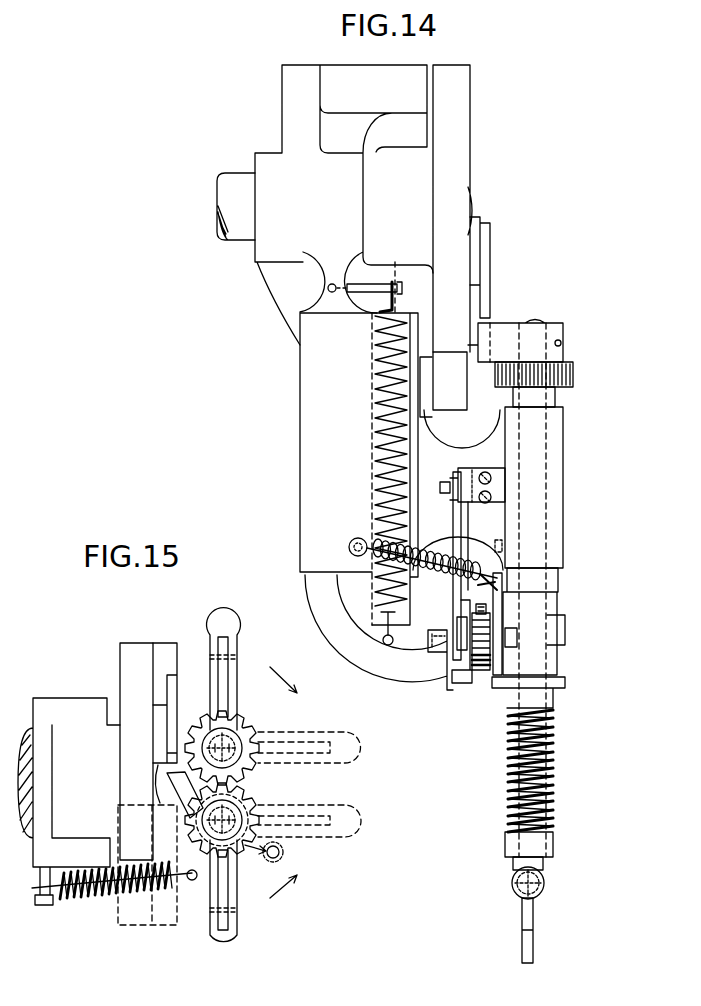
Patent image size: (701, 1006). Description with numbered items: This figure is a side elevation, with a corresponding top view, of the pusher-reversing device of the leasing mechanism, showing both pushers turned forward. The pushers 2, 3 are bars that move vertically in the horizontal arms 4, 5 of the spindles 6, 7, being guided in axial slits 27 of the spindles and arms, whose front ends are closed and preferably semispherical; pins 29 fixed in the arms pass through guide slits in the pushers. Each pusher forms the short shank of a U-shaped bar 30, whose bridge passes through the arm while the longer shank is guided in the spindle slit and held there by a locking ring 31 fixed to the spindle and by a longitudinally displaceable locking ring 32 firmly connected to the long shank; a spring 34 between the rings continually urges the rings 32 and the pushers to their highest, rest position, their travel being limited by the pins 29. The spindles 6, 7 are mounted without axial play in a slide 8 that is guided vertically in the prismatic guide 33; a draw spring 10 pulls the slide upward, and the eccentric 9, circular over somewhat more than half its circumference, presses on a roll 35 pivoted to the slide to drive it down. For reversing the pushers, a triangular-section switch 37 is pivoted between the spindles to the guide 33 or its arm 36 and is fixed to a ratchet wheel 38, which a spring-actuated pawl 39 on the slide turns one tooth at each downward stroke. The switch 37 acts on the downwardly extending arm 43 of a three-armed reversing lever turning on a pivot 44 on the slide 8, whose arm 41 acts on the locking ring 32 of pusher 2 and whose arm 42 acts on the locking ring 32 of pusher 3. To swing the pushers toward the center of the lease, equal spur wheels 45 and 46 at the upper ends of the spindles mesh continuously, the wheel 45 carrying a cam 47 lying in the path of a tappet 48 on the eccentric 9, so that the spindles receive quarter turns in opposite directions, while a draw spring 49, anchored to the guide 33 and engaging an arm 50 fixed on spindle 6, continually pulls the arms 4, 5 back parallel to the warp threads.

In FIG. 15, the pusher 2 is at (222, 947).
In FIG. 15, the pusher 3 is at (233, 615).
In FIG. 14, the horizontal arm 4 is at (540, 893).
In FIG. 15, the horizontal arm 4 is at (230, 945).
In FIG. 15, the horizontal arm 5 is at (237, 630).
In FIG. 14, the spindle 6 is at (548, 800).
In FIG. 15, the spindle 6 is at (235, 840).
In FIG. 15, the spindle 7 is at (233, 742).
In FIG. 14, the slide 8 is at (555, 430).
In FIG. 14, the eccentric 9 is at (456, 117).
In FIG. 15, the eccentric 9 is at (127, 667).
In FIG. 14, the draw spring 10 is at (372, 278).
In FIG. 14, the axial slit 27 is at (528, 782).
In FIG. 14, the pin 29 is at (517, 887).
In FIG. 15, the pin 29 is at (205, 912).
In FIG. 14, the U-shaped bar 30 is at (528, 958).
In FIG. 15, the U-shaped bar 30 is at (245, 900).
In FIG. 14, the locking ring 31 is at (512, 843).
In FIG. 14, the locking ring 32 is at (567, 697).
In FIG. 14, the prismatic guide 33 is at (315, 435).
In FIG. 15, the prismatic guide 33 is at (68, 707).
In FIG. 14, the spring 34 is at (547, 760).
In FIG. 14, the roll 35 is at (460, 388).
In FIG. 14, the arm 36 is at (383, 667).
In FIG. 14, the switch 37 is at (487, 678).
In FIG. 14, the ratchet wheel 38 is at (462, 672).
In FIG. 14, the spring-actuated pawl 39 is at (457, 527).
In FIG. 14, the arm of reversing lever 41 is at (497, 665).
In FIG. 14, the arm of reversing lever 42 is at (497, 552).
In FIG. 14, the arm of reversing lever 43 is at (483, 668).
In FIG. 14, the pivot 44 is at (480, 609).
In FIG. 14, the spur wheel 45 is at (570, 363).
In FIG. 15, the spur wheel 45 is at (252, 805).
In FIG. 14, the spur wheel 46 is at (534, 385).
In FIG. 15, the spur wheel 46 is at (247, 772).
In FIG. 14, the cam 47 is at (505, 337).
In FIG. 15, the cam 47 is at (189, 707).
In FIG. 14, the tappet 48 is at (475, 262).
In FIG. 15, the tappet 48 is at (170, 653).
In FIG. 14, the draw spring 49 is at (490, 580).
In FIG. 15, the draw spring 49 is at (103, 895).
In FIG. 14, the arm 50 is at (497, 588).
In FIG. 15, the arm 50 is at (213, 850).